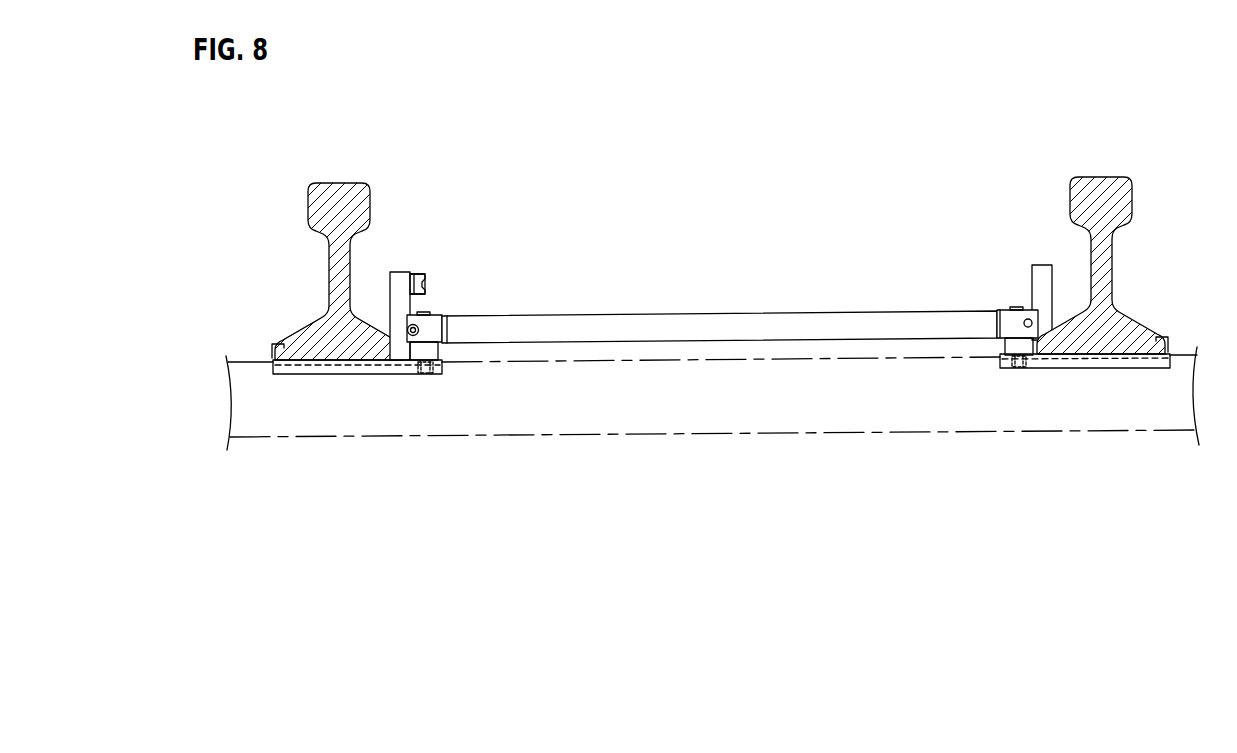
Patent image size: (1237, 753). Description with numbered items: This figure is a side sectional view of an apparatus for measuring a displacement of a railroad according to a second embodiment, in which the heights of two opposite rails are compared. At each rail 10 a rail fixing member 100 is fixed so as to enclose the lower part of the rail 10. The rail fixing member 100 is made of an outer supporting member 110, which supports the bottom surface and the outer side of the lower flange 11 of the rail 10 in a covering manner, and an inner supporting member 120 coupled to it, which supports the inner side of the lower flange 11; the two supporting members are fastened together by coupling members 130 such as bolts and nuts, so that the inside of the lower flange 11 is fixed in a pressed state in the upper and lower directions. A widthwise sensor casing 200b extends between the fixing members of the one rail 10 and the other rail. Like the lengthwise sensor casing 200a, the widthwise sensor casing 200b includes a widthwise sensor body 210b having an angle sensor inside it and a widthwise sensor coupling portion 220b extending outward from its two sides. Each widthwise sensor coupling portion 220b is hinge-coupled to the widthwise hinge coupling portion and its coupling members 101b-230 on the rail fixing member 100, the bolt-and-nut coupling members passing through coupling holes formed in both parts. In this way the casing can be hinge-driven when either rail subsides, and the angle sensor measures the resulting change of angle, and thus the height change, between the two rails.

The rail 10 is at (308, 278).
The lower flange 11 is at (305, 345).
The rail fixing member 100 is at (721, 459).
The outer supporting member 110 is at (367, 368).
The inner supporting member 120 is at (395, 348).
The coupling member 130 is at (423, 375).
The widthwise hinge coupling portion with coupling member 101b-230 is at (408, 325).
The lengthwise sensor casing 200a is at (415, 275).
The widthwise sensor casing 200b is at (722, 266).
The widthwise sensor body 210b is at (557, 330).
The widthwise sensor coupling portion 220b is at (433, 323).